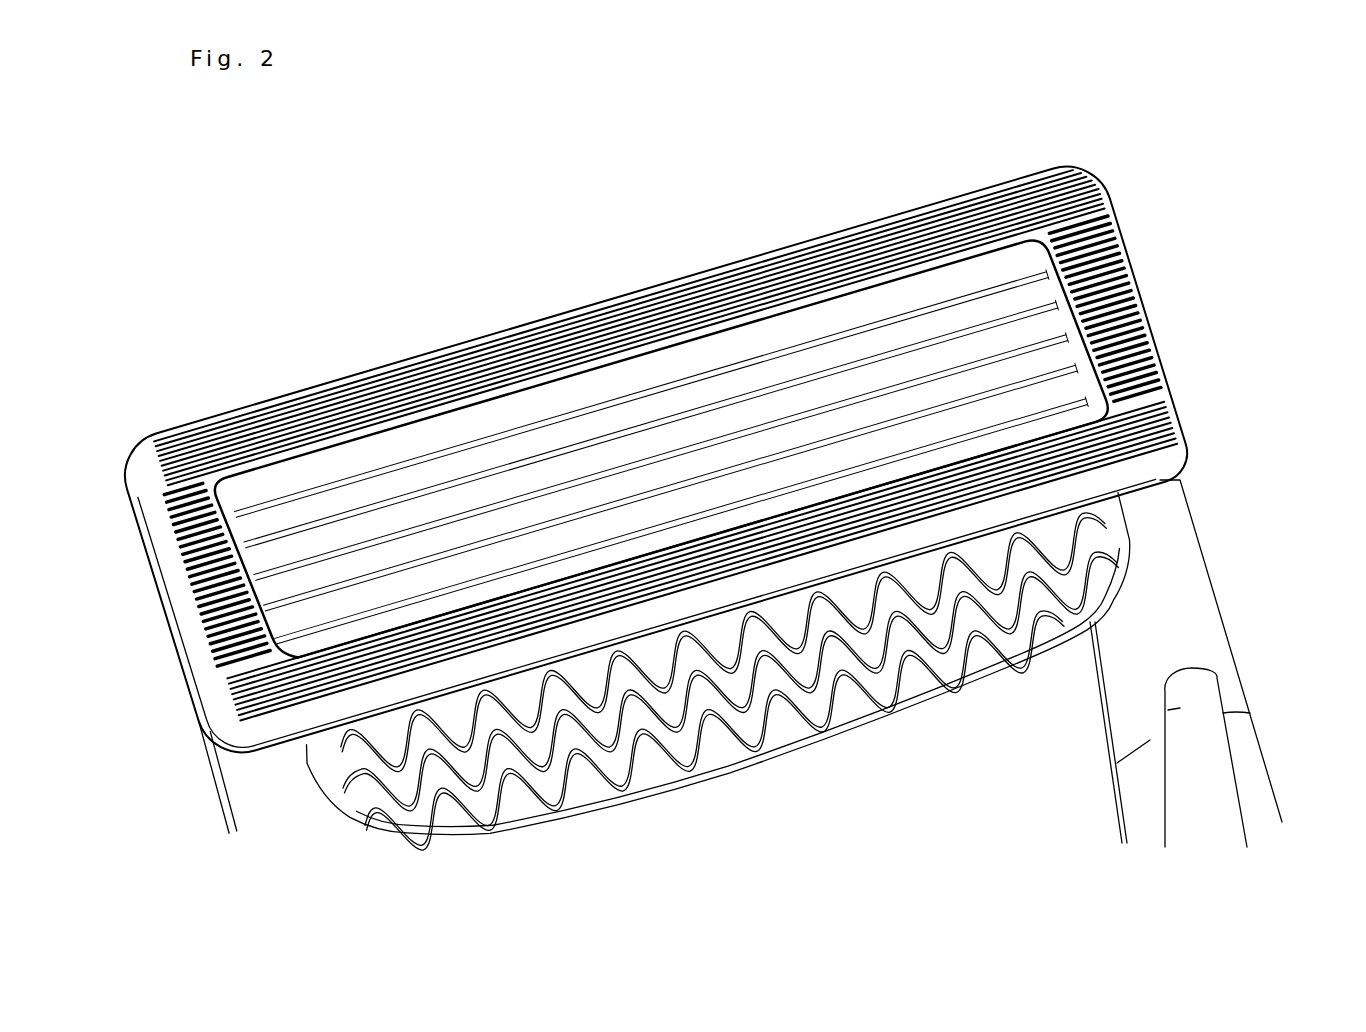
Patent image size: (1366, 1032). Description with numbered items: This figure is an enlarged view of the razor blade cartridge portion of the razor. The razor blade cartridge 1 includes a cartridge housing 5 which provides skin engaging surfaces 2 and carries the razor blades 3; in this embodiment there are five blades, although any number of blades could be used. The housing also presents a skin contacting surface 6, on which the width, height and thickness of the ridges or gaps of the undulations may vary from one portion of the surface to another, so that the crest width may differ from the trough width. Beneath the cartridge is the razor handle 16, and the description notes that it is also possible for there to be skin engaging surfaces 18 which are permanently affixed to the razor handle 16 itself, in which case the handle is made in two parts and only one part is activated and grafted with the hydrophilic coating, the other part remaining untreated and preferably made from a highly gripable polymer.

The razor blade cartridge 1 is at (533, 258).
The skin engaging surfaces 2 is at (1123, 268).
The razor blades 3 is at (717, 390).
The cartridge housing 5 is at (182, 598).
The skin contacting surface 6 is at (790, 275).
The razor handle 16 is at (1262, 598).
The skin engaging surfaces 18 is at (780, 723).